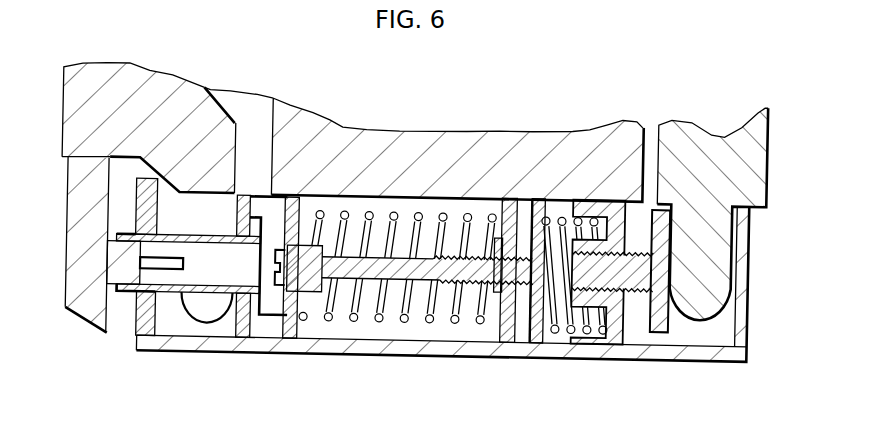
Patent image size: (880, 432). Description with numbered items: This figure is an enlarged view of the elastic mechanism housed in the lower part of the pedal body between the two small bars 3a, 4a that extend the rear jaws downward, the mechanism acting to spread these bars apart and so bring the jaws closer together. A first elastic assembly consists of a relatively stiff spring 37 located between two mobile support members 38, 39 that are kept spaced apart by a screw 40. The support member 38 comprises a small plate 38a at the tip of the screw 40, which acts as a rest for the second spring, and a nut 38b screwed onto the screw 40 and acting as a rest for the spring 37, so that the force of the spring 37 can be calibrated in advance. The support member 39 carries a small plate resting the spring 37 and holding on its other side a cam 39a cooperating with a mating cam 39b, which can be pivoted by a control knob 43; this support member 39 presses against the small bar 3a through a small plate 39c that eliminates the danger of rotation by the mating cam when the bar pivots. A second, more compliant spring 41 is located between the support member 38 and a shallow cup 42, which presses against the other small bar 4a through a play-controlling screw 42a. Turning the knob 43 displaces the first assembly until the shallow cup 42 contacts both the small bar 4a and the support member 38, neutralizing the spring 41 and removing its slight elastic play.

The small bar 3a is at (159, 92).
The small bar 4a is at (720, 145).
The spring 37 is at (411, 324).
The support member 38 is at (529, 196).
The small plate 38a is at (534, 328).
The nut 38b is at (501, 212).
The support member 39 is at (278, 192).
The cam 39a is at (283, 348).
The mating cam 39b is at (260, 321).
The small plate 39c is at (241, 196).
The screw 40 is at (368, 271).
The spring 41 is at (554, 330).
The shallow cup 42 is at (608, 329).
The screw 42a is at (658, 328).
The control knob 43 is at (99, 324).